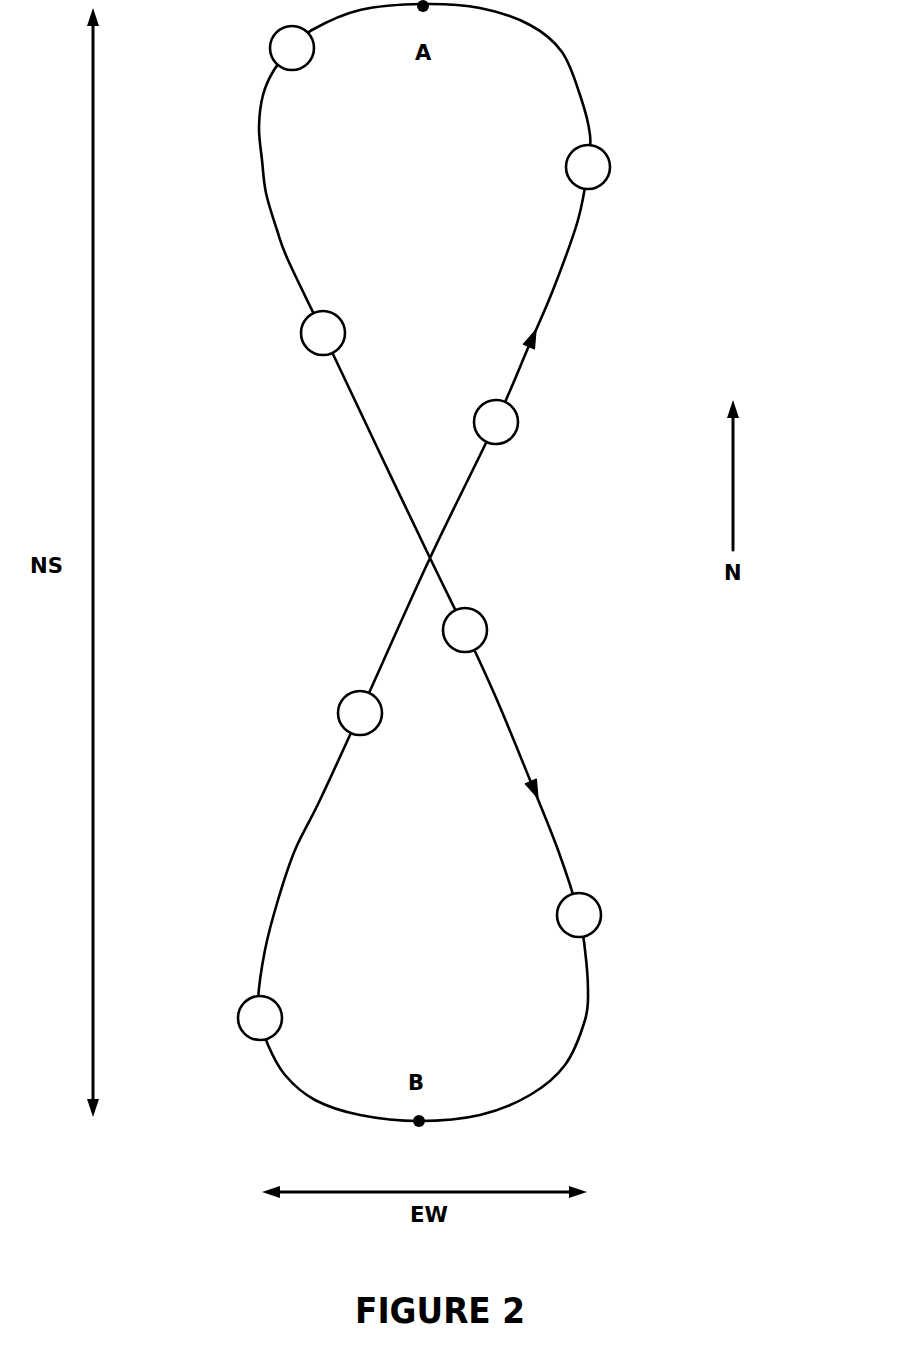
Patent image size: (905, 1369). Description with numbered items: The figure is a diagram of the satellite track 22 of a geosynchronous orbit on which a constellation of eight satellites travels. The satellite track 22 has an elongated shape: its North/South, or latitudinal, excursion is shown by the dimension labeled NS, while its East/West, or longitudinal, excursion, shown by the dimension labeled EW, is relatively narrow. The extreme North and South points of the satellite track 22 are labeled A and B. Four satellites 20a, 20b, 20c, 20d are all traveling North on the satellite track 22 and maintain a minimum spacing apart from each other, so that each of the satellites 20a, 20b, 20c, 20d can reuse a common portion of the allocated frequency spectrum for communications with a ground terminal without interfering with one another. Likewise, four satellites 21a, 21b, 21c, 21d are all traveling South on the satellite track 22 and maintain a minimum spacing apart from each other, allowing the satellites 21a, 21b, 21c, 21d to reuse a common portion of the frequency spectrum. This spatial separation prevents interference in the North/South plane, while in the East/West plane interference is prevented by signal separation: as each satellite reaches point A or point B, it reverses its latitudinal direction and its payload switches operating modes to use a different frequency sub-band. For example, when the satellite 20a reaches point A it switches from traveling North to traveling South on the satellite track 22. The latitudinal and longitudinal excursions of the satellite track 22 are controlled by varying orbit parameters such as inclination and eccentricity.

The satellite 20a is at (610, 178).
The satellite 20b is at (518, 428).
The satellite 20c is at (340, 705).
The satellite 20d is at (240, 1015).
The satellite 21a is at (272, 36).
The satellite 21b is at (301, 335).
The satellite 21c is at (484, 622).
The satellite 21d is at (600, 910).
The satellite track 22 is at (565, 55).